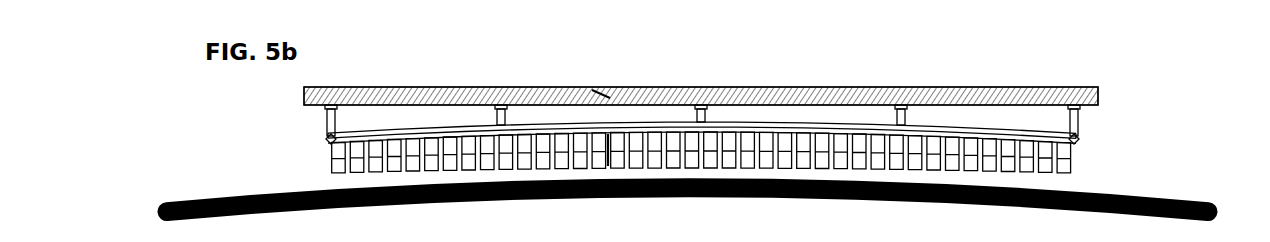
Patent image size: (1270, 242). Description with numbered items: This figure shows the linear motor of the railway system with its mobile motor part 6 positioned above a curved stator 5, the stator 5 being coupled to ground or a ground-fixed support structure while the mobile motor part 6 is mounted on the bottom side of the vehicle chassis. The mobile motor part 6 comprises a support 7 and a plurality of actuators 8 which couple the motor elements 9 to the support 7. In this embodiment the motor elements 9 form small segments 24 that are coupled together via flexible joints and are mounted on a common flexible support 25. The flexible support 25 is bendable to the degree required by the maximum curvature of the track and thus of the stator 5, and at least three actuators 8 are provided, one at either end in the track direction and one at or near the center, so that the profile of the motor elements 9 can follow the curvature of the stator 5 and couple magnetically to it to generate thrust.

The stator 5 is at (1156, 183).
The mobile motor part 6 is at (714, 64).
The support 7 is at (858, 92).
The actuator 8 is at (1073, 127).
The motor element 9 is at (990, 136).
The segment 24 is at (1066, 170).
The flexible support 25 is at (937, 131).